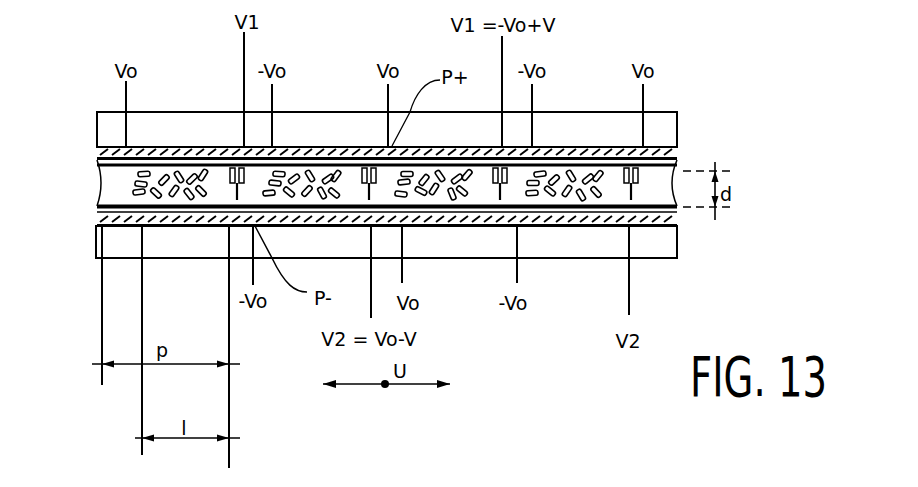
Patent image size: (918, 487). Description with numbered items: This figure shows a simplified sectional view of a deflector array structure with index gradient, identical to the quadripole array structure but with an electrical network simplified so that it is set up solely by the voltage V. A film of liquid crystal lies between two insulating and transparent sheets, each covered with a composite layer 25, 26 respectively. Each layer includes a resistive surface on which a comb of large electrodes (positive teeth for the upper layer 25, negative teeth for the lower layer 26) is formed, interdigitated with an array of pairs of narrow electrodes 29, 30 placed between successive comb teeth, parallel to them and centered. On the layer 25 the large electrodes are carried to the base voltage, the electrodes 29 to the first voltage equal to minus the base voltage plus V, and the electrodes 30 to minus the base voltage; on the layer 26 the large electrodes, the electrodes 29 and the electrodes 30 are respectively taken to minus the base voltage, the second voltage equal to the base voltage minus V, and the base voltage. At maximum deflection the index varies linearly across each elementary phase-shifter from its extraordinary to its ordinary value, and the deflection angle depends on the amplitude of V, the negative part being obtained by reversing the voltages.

The composite layer 25 is at (97, 152).
The composite layer 26 is at (97, 218).
The narrow electrode 29 is at (223, 147).
The narrow electrode 30 is at (293, 147).